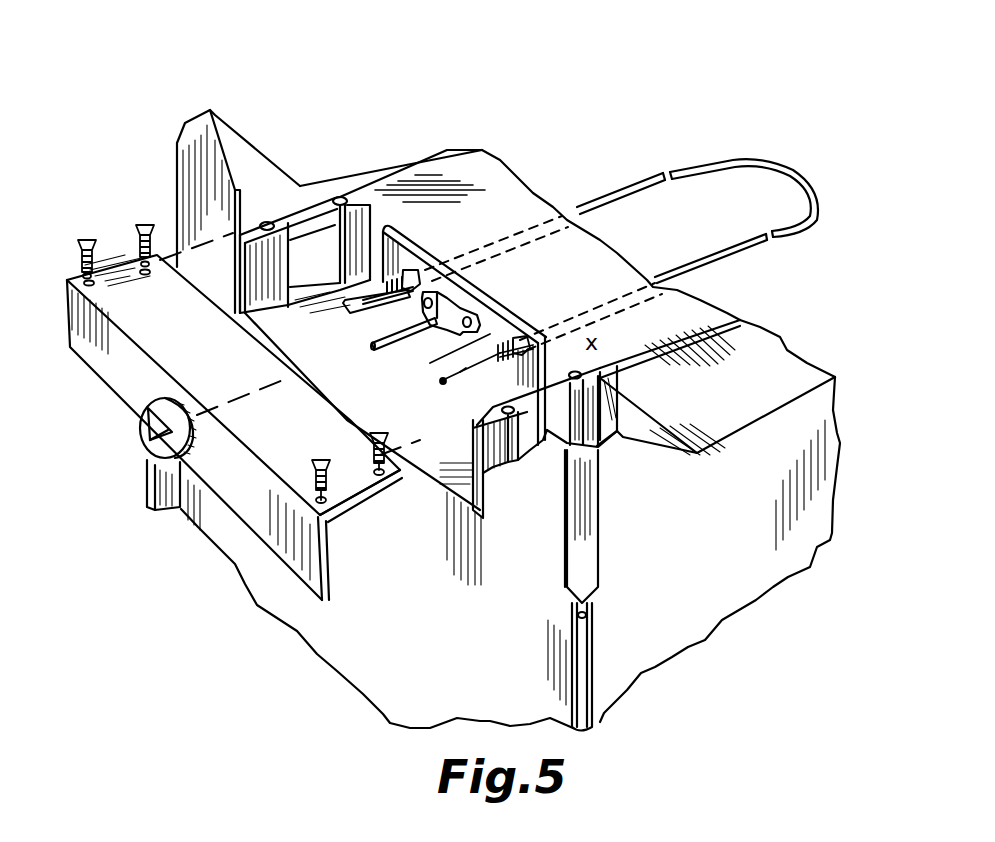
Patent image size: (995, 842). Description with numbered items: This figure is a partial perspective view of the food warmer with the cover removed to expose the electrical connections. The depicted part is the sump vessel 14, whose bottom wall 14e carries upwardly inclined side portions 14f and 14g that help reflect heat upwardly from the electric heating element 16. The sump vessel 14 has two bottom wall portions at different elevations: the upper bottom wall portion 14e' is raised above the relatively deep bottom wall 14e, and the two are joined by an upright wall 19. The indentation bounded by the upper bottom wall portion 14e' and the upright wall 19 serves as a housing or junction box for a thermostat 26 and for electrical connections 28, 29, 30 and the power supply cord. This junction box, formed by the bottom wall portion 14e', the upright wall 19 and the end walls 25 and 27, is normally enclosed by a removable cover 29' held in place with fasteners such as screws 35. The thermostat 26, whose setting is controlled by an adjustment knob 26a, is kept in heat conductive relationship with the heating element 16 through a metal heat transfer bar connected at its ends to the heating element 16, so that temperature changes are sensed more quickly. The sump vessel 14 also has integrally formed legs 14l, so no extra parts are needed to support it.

The sump vessel 14 is at (175, 193).
The legs 14l is at (210, 120).
The upwardly inclined side portion 14g is at (382, 173).
The bottom wall 14e is at (605, 229).
The upper bottom wall portion 14e' is at (320, 371).
The upwardly inclined side portion 14f is at (760, 337).
The electric heating element 16 is at (773, 157).
The upright wall 19 is at (380, 262).
The end wall 25 is at (307, 213).
The thermostat 26 is at (457, 287).
The adjustment knob 26a is at (137, 435).
The end wall 27 is at (497, 310).
The electrical connection 28 is at (350, 320).
The electrical connection 29 is at (390, 353).
The removable cover 29' is at (215, 388).
The electrical connection 30 is at (443, 380).
The screws 35 is at (135, 223).